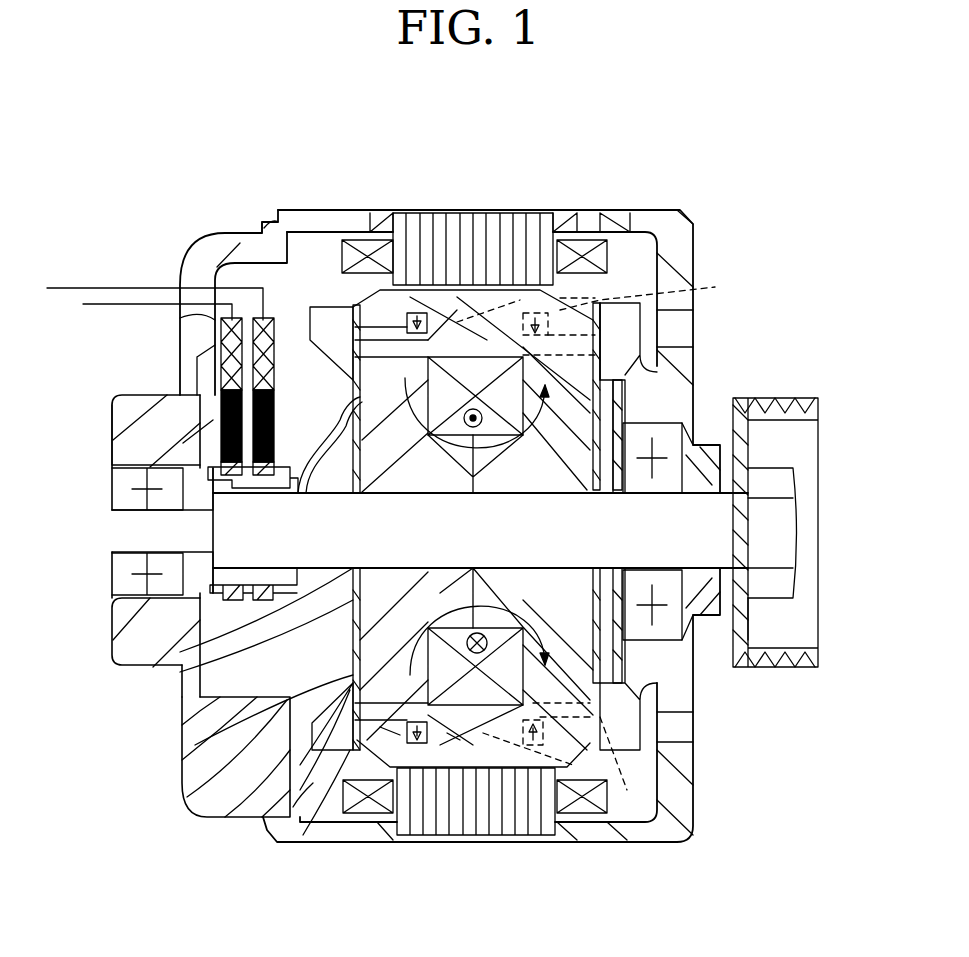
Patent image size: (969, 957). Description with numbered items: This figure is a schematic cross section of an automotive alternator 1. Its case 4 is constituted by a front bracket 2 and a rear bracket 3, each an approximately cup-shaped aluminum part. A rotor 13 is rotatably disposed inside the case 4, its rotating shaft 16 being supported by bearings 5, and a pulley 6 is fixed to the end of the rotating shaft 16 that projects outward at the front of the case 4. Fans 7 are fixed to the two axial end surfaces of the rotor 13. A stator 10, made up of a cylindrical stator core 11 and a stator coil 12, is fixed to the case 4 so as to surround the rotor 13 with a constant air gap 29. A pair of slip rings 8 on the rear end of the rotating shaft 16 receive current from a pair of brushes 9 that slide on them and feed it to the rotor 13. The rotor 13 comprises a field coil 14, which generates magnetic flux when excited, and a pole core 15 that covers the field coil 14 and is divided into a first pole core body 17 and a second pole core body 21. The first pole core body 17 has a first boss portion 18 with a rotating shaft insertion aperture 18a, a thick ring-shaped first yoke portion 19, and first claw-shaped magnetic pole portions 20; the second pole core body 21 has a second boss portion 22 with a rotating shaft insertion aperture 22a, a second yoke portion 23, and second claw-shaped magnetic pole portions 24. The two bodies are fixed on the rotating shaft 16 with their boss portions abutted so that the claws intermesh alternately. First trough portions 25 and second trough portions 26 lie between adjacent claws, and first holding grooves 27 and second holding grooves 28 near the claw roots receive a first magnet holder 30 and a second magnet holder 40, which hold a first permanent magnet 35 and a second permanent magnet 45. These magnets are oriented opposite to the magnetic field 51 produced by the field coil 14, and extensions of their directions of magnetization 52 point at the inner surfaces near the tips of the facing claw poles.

The automotive alternator 1 is at (126, 155).
The front bracket 2 is at (697, 262).
The rear bracket 3 is at (213, 236).
The case 4 is at (702, 216).
The bearings 5 is at (118, 487).
The pulley 6 is at (776, 398).
The fans 7 is at (633, 327).
The slip rings 8 is at (215, 525).
The brushes 9 is at (220, 383).
The stator 10 is at (520, 892).
The stator core 11 is at (533, 827).
The stator coil 12 is at (580, 803).
The rotor 13 is at (600, 300).
The field coil 14 is at (493, 370).
The pole core 15 is at (513, 148).
The rotating shaft 16 is at (733, 530).
The first pole core body 17 is at (495, 305).
The first boss portion 18 is at (600, 550).
The rotating shaft insertion aperture 18a is at (740, 638).
The first yoke portion 19 is at (622, 575).
The first claw-shaped magnetic pole portions 20 is at (493, 747).
The second pole core body 21 is at (440, 330).
The second boss portion 22 is at (217, 660).
The rotating shaft insertion aperture 22a is at (180, 653).
The second yoke portion 23 is at (210, 812).
The second claw-shaped magnetic pole portions 24 is at (447, 733).
The first trough portions 25 is at (600, 760).
The second trough portions 26 is at (300, 810).
The first holding grooves 27 is at (627, 790).
The second holding grooves 28 is at (383, 727).
The air gap 29 is at (405, 330).
The first magnet holder 30 is at (660, 290).
The first permanent magnet 35 is at (573, 765).
The second magnet holder 40 is at (270, 222).
The second permanent magnet 45 is at (410, 745).
The magnetic field 51 is at (227, 703).
The directions of magnetization 52 is at (410, 322).